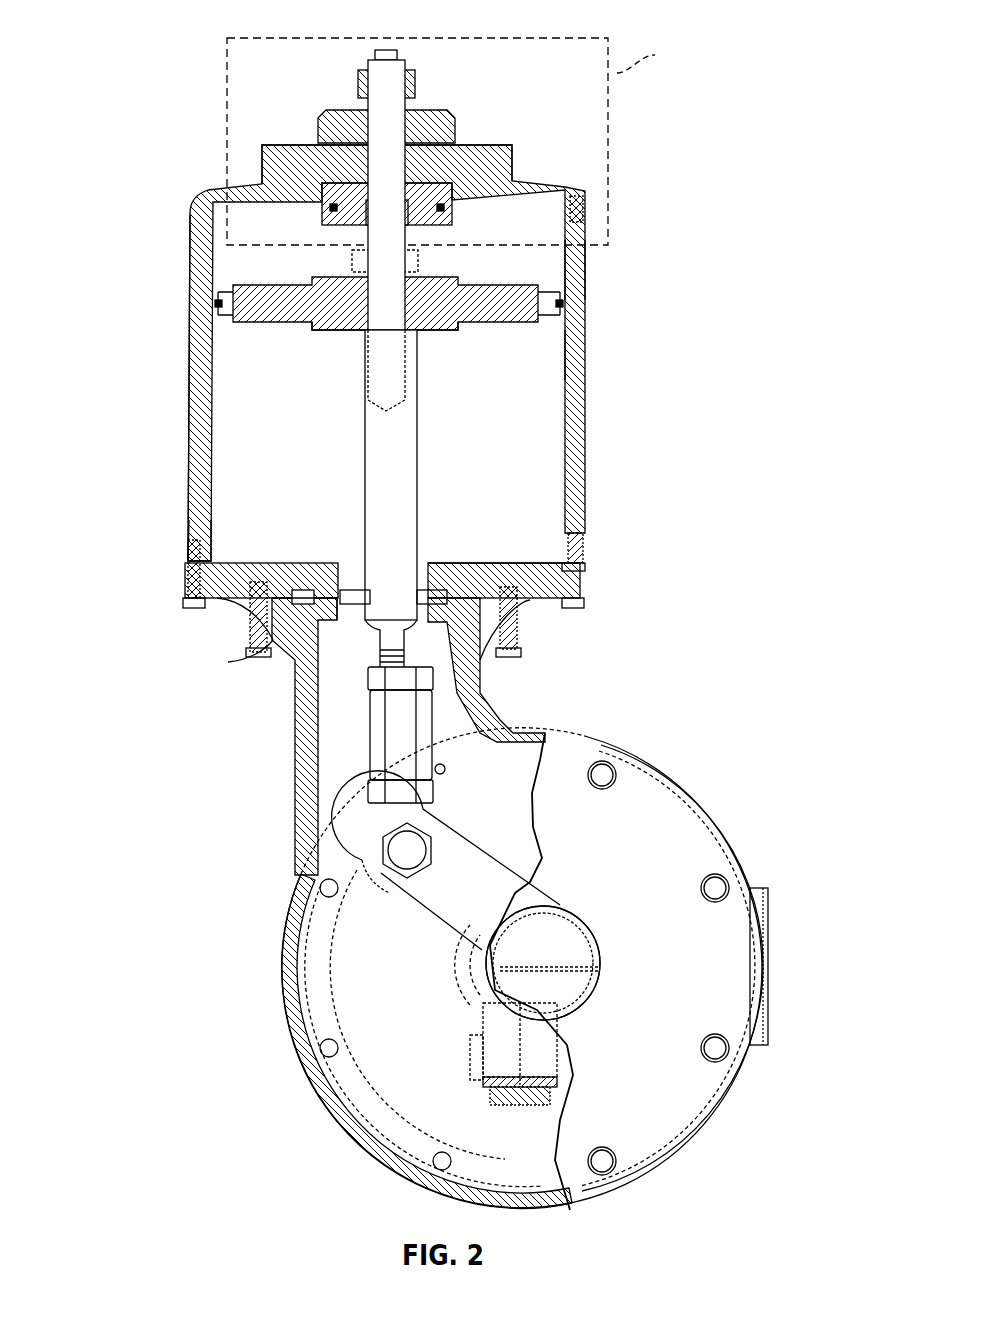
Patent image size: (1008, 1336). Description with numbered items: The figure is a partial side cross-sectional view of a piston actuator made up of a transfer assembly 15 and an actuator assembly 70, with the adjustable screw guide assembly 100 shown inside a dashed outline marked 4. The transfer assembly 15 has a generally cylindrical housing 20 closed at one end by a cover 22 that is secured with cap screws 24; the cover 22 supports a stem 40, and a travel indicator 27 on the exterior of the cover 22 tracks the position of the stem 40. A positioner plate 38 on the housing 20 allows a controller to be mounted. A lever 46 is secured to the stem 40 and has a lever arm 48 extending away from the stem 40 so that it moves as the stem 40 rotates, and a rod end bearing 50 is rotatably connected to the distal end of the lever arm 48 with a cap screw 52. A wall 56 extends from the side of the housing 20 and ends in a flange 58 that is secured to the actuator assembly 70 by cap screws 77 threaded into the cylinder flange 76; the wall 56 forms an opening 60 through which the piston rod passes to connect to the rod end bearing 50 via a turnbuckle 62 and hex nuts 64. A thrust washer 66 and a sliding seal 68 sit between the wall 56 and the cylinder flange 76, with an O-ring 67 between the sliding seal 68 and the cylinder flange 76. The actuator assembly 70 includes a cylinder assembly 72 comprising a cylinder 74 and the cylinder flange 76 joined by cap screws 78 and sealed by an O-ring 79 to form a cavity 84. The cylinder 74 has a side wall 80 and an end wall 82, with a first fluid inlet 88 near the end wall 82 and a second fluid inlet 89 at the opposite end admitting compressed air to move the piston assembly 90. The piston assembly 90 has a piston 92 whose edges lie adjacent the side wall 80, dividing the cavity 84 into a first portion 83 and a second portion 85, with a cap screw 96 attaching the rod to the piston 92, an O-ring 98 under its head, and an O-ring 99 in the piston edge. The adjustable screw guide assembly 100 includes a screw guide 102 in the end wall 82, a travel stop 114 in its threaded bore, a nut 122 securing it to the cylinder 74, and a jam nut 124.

The actuator assembly 4 is at (643, 57).
The transfer assembly 15 is at (322, 1150).
The housing 20 is at (700, 1130).
The cover 22 is at (640, 1135).
The cap screws 24 is at (603, 775).
The travel indicator 27 is at (612, 921).
The positioner plate 38 is at (769, 932).
The stem 40 is at (543, 940).
The lever 46 is at (490, 992).
The lever arm 48 is at (396, 925).
The rod end bearing 50 is at (403, 809).
The cap screw 52 is at (385, 865).
The wall 56 is at (484, 700).
The flange 58 is at (535, 640).
The opening 60 is at (348, 640).
The turnbuckle 62 is at (370, 737).
The hex nuts 64 is at (370, 678).
The thrust washer 66 is at (306, 612).
The O-ring 67 is at (445, 598).
The sliding seal 68 is at (580, 578).
The actuator assembly 70 is at (646, 269).
The cylinder assembly 72 is at (167, 537).
The cylinder 74 is at (192, 455).
The cylinder flange 76 is at (193, 580).
The cap screws 77 is at (255, 657).
The cap screws 78 is at (195, 604).
The O-ring 79 is at (586, 553).
The side wall 80 is at (200, 426).
The end wall 82 is at (282, 148).
The first portion 83 is at (490, 265).
The cavity 84 is at (545, 352).
The second portion 85 is at (490, 410).
The first fluid inlet 88 is at (579, 196).
The second fluid inlet 89 is at (578, 545).
The piston assembly 90 is at (340, 367).
The piston 92 is at (332, 288).
The cap screw 96 is at (360, 259).
The O-ring 98 is at (350, 326).
The O-ring 99 is at (219, 304).
The adjustable screw guide assembly 100 is at (348, 45).
The screw guide 102 is at (422, 213).
The travel stop 114 is at (378, 237).
The nut 122 is at (458, 128).
The jam nut 124 is at (416, 82).